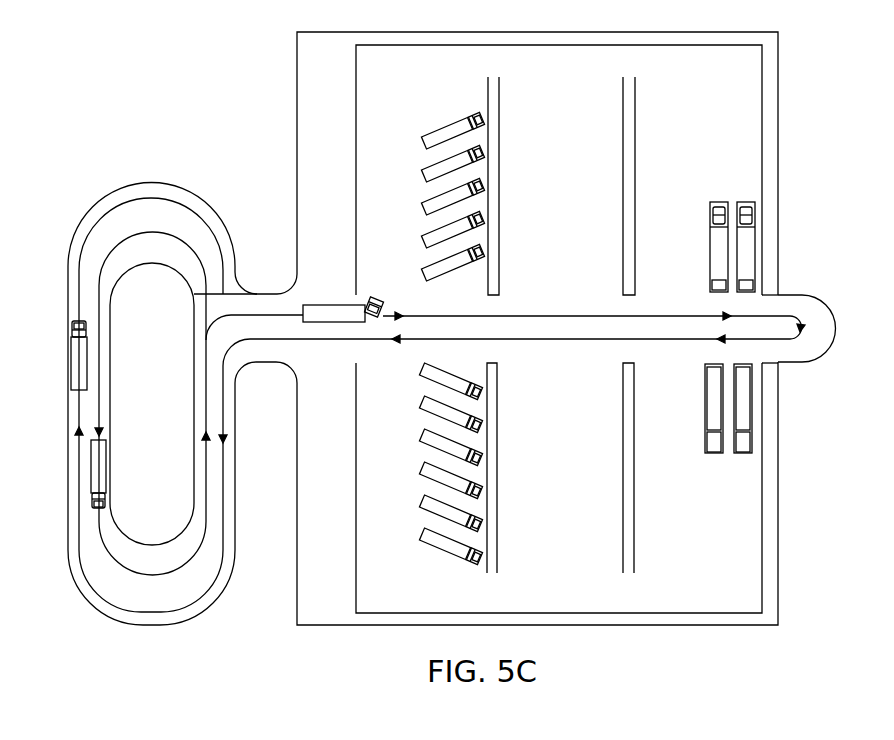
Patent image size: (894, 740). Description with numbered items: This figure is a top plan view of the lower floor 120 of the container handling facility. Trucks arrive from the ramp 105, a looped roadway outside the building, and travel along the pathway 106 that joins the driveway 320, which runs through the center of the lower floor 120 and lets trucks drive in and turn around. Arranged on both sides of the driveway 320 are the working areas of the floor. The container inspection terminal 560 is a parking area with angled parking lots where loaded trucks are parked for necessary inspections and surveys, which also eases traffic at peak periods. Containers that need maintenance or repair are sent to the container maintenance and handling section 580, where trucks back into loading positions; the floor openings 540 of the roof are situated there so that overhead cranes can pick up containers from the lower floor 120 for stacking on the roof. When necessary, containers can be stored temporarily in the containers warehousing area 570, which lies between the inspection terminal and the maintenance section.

The ramp 105 is at (155, 183).
The pathway 106 is at (277, 293).
The lower floor 120 is at (801, 112).
The driveway 320 is at (437, 337).
The floor openings 540 is at (717, 363).
The container inspection terminal 560 is at (436, 117).
The containers warehousing area 570 is at (578, 188).
The container maintenance and handling section 580 is at (716, 190).